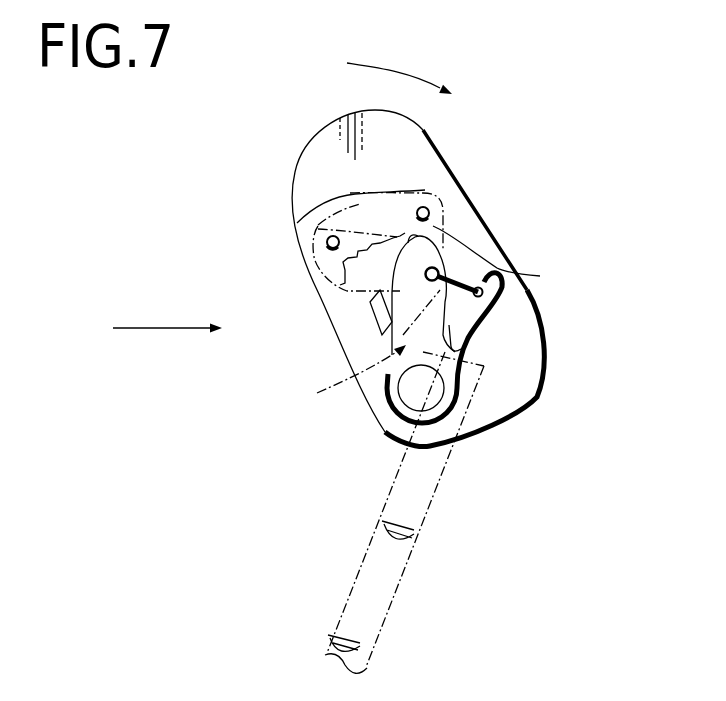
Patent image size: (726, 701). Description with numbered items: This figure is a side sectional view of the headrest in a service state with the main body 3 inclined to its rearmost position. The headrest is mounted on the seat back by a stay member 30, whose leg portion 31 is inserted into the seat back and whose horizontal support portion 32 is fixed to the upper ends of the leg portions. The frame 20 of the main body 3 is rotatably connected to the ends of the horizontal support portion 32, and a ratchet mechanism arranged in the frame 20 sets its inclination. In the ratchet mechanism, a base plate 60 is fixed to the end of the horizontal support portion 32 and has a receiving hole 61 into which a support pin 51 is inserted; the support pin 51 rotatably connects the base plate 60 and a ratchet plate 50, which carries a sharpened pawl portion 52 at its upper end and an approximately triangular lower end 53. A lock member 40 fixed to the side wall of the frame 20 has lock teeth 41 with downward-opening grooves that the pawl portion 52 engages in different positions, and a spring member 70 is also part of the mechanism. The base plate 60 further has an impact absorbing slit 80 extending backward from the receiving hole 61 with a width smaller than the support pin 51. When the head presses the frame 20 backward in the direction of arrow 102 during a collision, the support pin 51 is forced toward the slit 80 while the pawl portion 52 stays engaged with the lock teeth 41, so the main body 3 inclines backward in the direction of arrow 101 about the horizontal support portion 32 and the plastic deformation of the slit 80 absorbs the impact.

The main body 3 is at (280, 140).
The frame 20 is at (427, 118).
The stay member 30 is at (363, 464).
The leg portion 31 is at (390, 583).
The horizontal support portion 32 is at (412, 398).
The lock member 40 is at (350, 193).
The lock teeth 41 is at (318, 229).
The ratchet plate 50 is at (420, 310).
The support pin 51 is at (583, 210).
The pawl portion 52 is at (418, 236).
The lower end 53 is at (600, 265).
The base plate 60 is at (462, 320).
The receiving hole 61 is at (429, 268).
The spring member 70 is at (342, 386).
The impact absorbing slit 80 is at (537, 278).
The arrow 101 is at (405, 70).
The arrow 102 is at (147, 330).